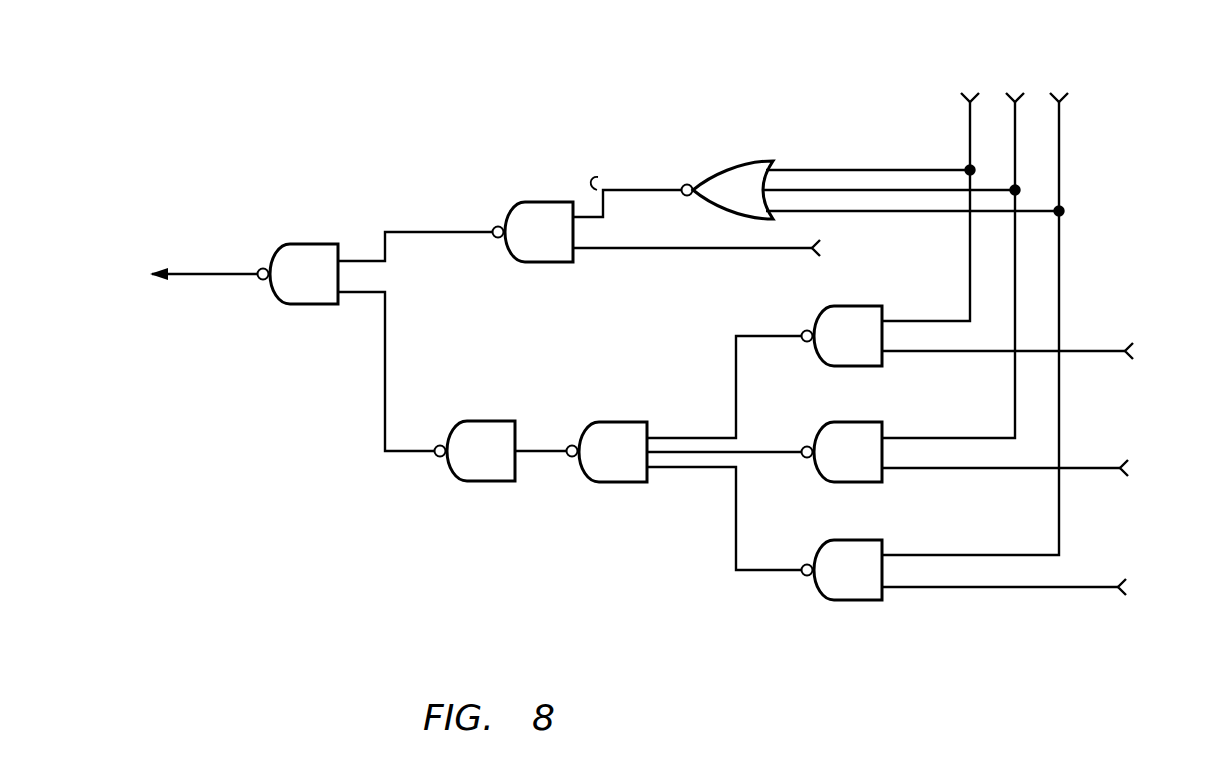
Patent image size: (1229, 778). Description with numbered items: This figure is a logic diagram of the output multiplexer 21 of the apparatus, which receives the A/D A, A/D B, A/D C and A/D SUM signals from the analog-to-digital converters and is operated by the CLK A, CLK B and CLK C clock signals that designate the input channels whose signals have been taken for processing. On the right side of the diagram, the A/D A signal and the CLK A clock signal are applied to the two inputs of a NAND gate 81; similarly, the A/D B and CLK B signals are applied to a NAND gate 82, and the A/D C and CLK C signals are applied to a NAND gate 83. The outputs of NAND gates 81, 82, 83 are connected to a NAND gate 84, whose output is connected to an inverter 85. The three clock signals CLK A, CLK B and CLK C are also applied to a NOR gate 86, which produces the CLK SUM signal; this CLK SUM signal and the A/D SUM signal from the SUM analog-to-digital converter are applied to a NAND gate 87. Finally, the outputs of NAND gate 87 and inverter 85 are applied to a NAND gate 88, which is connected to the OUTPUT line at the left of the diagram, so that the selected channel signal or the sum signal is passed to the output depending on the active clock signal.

The output multiplexer 21 is at (463, 153).
The NAND gate 81 is at (823, 308).
The NAND gate 82 is at (838, 422).
The NAND gate 83 is at (833, 540).
The NAND gate 84 is at (630, 422).
The inverter 85 is at (500, 421).
The NOR gate 86 is at (753, 162).
The NAND gate 87 is at (542, 202).
The NAND gate 88 is at (313, 244).